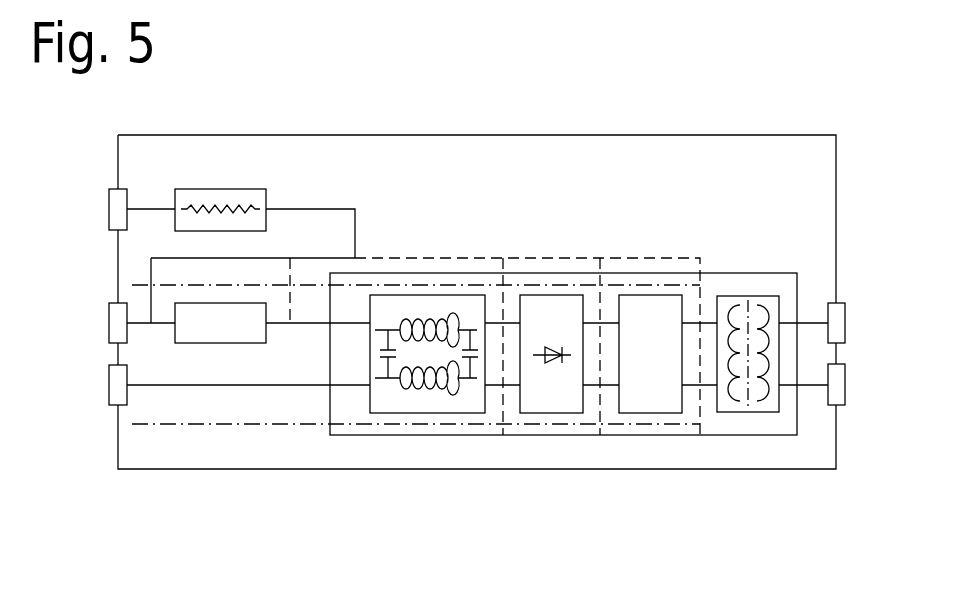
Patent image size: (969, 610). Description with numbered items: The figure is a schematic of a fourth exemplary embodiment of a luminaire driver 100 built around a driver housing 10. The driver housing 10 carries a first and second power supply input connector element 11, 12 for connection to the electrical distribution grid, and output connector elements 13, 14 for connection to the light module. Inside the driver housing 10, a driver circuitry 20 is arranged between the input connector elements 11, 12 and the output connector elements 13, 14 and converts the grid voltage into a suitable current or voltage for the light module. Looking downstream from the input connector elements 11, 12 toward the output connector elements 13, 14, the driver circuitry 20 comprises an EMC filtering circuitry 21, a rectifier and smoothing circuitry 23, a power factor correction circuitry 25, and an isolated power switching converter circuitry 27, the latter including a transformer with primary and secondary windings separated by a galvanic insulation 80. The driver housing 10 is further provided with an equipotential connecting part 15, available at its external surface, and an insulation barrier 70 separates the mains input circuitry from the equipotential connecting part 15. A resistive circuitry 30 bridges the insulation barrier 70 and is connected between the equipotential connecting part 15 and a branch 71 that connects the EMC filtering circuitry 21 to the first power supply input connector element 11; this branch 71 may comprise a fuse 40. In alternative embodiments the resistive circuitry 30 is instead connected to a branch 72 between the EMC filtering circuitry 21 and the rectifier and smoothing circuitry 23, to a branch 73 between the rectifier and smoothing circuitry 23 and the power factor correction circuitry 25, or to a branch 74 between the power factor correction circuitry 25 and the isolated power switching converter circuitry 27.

The driver housing 10 is at (427, 135).
The luminaire driver 100 is at (513, 475).
The first power supply input connector element 11 is at (120, 316).
The second power supply input connector element 12 is at (120, 380).
The output connector element 13 is at (840, 332).
The output connector element 14 is at (837, 382).
The equipotential connecting part 15 is at (120, 217).
The driver circuitry 20 is at (748, 273).
The EMC filtering circuitry 21 is at (432, 413).
The rectifier and smoothing circuitry 23 is at (556, 413).
The power factor correction circuitry 25 is at (651, 413).
The isolated power switching converter circuitry 27 is at (756, 413).
The resistive circuitry 30 is at (242, 196).
The fuse 40 is at (228, 330).
The insulation barrier 70 is at (370, 283).
The branch 71 is at (353, 327).
The branch 72 is at (503, 327).
The branch 73 is at (600, 327).
The branch 74 is at (700, 327).
The galvanic insulation 80 is at (743, 307).